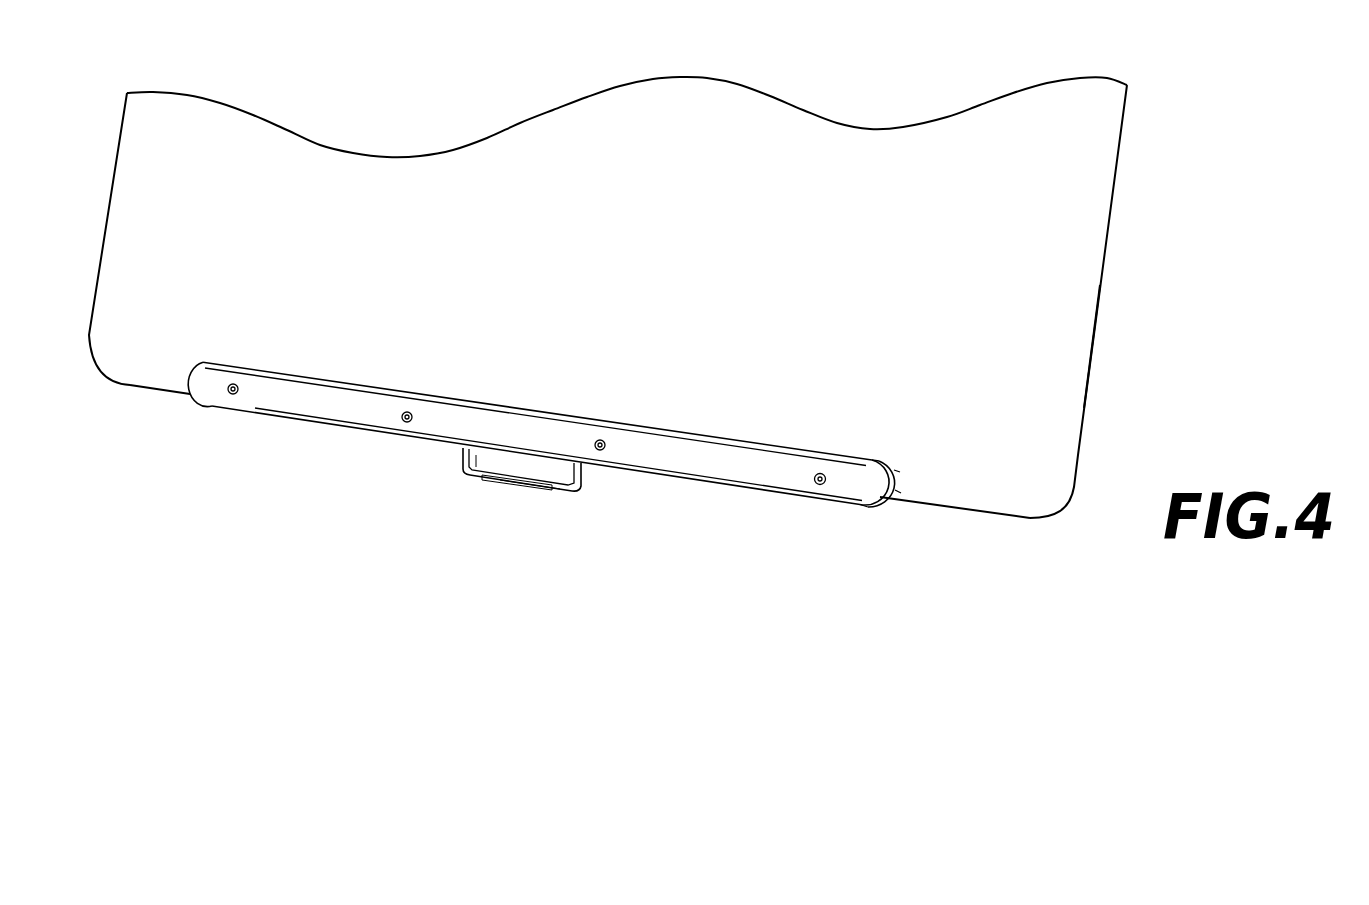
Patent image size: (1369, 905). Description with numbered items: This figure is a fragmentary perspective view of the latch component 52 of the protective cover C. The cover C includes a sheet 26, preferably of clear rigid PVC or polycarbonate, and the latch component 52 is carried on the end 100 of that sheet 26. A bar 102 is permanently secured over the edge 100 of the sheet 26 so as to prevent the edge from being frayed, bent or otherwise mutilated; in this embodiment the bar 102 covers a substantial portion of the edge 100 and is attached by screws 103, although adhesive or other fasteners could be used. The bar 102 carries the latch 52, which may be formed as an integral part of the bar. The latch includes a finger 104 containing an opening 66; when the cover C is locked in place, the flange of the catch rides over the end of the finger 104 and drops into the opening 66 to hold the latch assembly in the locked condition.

The sheet 26 is at (1077, 188).
The protective cover C is at (1056, 362).
The end of the sheet 100 is at (947, 508).
The bar 102 is at (692, 458).
The screws 103 is at (408, 409).
The latch component 52 is at (480, 456).
The opening 66 is at (497, 473).
The finger 104 is at (541, 491).